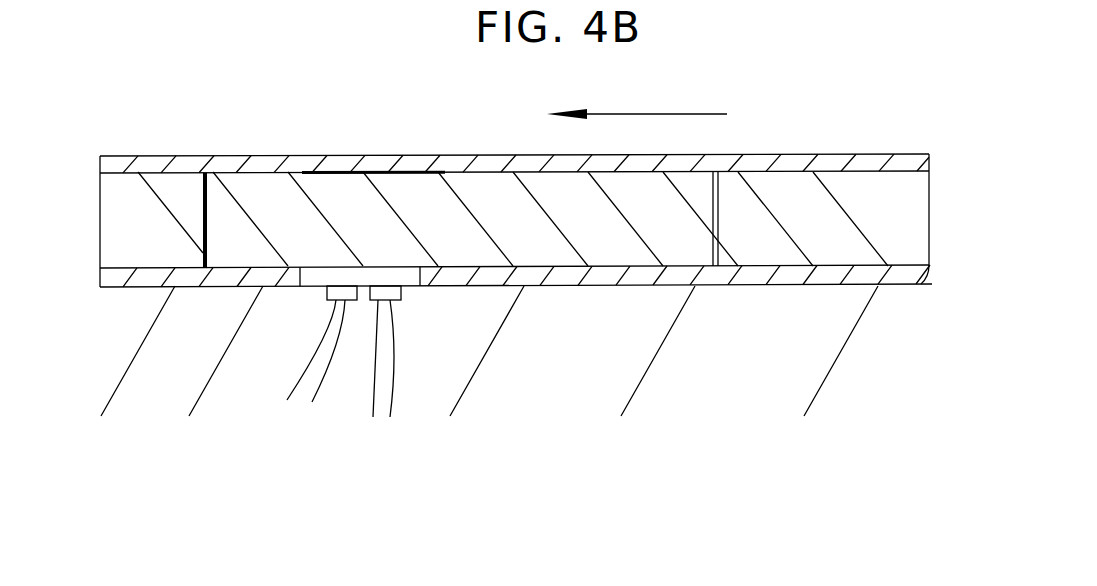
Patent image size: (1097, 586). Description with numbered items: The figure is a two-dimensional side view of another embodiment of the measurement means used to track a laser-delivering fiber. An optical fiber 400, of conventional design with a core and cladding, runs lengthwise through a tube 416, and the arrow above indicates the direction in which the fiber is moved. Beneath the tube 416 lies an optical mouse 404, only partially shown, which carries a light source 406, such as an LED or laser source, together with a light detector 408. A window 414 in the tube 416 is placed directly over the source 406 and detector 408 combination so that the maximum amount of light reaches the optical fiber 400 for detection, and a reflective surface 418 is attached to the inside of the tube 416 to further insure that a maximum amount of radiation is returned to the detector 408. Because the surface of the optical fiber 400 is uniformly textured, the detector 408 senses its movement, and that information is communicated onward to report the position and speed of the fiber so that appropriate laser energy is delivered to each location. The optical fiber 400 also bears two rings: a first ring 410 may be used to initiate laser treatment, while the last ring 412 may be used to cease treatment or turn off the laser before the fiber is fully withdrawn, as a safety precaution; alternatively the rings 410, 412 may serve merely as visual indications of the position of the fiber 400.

The optical fiber 400 is at (885, 205).
The optical mouse 404 is at (610, 358).
The light source 406 is at (403, 290).
The light detector 408 is at (312, 289).
The first ring 410 is at (203, 228).
The last ring 412 is at (718, 215).
The window 414 is at (300, 277).
The tube 416 is at (526, 111).
The reflective surface 418 is at (418, 172).